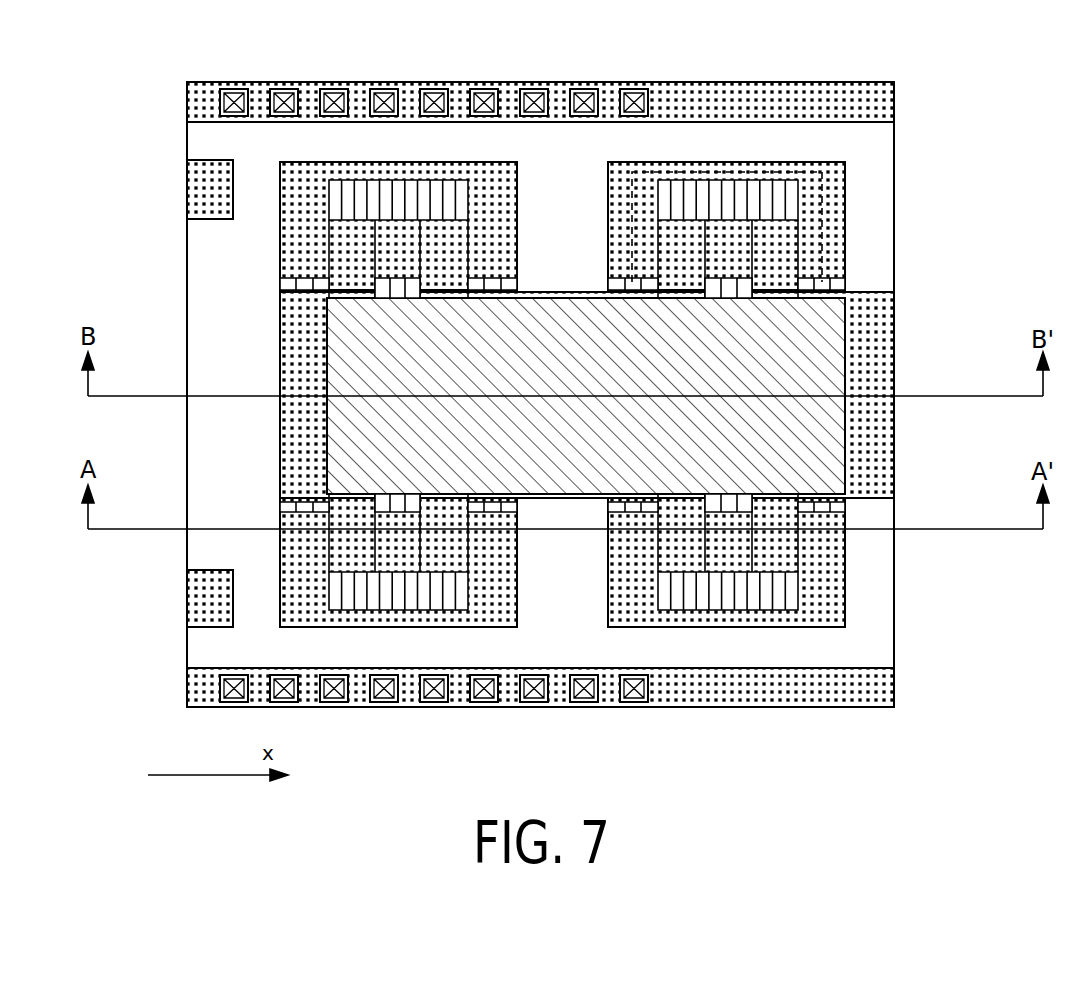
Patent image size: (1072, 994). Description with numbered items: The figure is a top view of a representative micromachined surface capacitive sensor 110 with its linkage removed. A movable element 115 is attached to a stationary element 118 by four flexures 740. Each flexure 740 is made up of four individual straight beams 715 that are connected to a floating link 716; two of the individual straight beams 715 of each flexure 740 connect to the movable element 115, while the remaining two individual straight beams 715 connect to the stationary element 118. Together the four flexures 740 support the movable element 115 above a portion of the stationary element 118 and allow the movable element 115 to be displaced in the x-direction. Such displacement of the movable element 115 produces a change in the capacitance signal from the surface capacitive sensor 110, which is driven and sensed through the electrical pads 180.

The surface capacitive sensor 110 is at (998, 70).
The movable element 115 is at (827, 342).
The stationary element 118 is at (875, 452).
The electrical pads 180 is at (423, 707).
The individual straight beams 715 is at (752, 558).
The floating link 716 is at (758, 598).
The flexures 740 is at (822, 214).